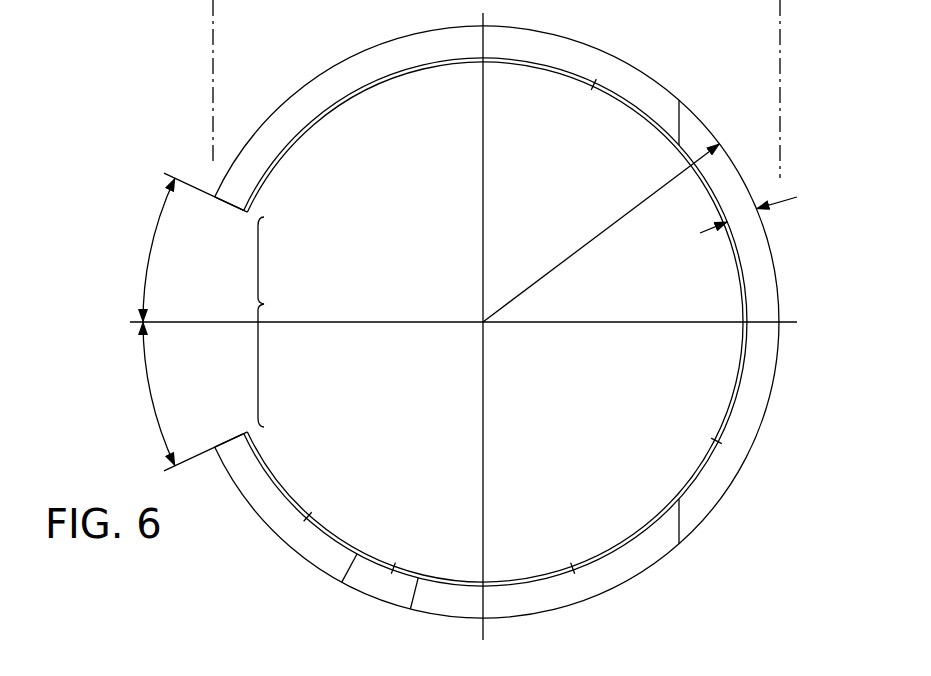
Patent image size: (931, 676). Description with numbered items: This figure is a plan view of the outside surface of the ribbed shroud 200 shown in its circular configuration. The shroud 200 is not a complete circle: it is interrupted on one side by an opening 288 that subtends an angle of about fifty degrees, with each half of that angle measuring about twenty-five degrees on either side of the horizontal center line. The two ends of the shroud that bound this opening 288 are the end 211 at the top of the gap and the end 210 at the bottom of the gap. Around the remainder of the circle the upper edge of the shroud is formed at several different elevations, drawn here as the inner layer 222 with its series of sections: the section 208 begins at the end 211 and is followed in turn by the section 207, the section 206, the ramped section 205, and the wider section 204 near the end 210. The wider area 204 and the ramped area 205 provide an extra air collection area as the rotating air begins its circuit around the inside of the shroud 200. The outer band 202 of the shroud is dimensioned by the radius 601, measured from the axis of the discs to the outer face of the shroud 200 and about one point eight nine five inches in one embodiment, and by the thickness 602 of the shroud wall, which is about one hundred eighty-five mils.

The ribbed shroud 200 is at (488, 343).
The ring body 202 is at (358, 54).
The inner conductive layer 222 is at (372, 84).
The section 204 is at (308, 517).
The section 205 is at (393, 568).
The section 206 is at (573, 568).
The section 207 is at (716, 441).
The section 208 is at (594, 84).
The lower gap end 210 is at (224, 429).
The end 211 is at (225, 218).
The opening 288 is at (264, 304).
The radius 601 is at (604, 230).
The thickness 602 is at (774, 208).